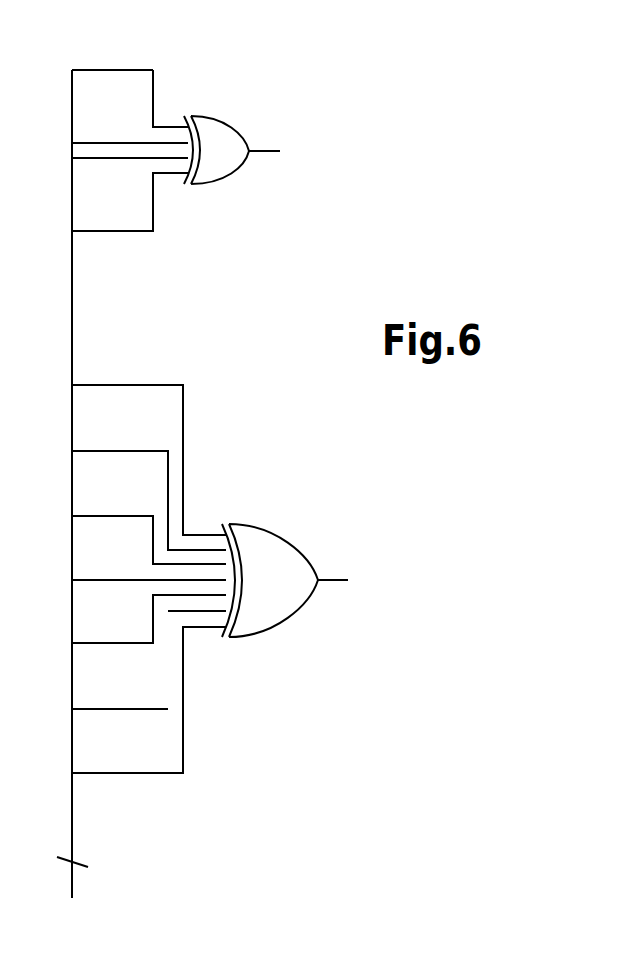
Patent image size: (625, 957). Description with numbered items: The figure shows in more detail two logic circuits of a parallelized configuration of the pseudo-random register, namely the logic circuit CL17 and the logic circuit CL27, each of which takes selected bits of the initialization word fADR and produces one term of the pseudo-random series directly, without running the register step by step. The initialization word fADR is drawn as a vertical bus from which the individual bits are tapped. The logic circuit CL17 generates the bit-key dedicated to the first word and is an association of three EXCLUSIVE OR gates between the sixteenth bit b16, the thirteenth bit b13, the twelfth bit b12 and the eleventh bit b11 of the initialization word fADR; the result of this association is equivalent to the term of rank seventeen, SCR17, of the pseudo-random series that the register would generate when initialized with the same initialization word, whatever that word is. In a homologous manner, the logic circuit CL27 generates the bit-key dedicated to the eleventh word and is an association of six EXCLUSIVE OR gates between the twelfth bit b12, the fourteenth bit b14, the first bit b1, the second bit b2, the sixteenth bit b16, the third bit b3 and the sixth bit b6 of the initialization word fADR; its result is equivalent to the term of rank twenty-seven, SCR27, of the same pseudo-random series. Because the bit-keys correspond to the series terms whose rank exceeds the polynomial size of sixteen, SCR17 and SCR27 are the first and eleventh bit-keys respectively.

The sixteenth bit of the initialization word b16 is at (113, 68).
The thirteenth bit of the initialization word b13 is at (112, 142).
The twelfth bit of the initialization word b12 is at (113, 162).
The eleventh bit of the initialization word b11 is at (113, 233).
The fourteenth bit of the initialization word b14 is at (113, 448).
The first bit of the initialization word b1 is at (113, 513).
The second bit of the initialization word b2 is at (120, 578).
The third bit of the initialization word b3 is at (113, 713).
The sixth bit of the initialization word b6 is at (113, 776).
The logic circuit CL17 is at (229, 182).
The logic circuit CL27 is at (295, 622).
The term of rank 17 of the pseudo-random series SCR17 is at (319, 153).
The term of rank 27 of the pseudo-random series SCR27 is at (396, 581).
The initialization word fADR is at (66, 899).